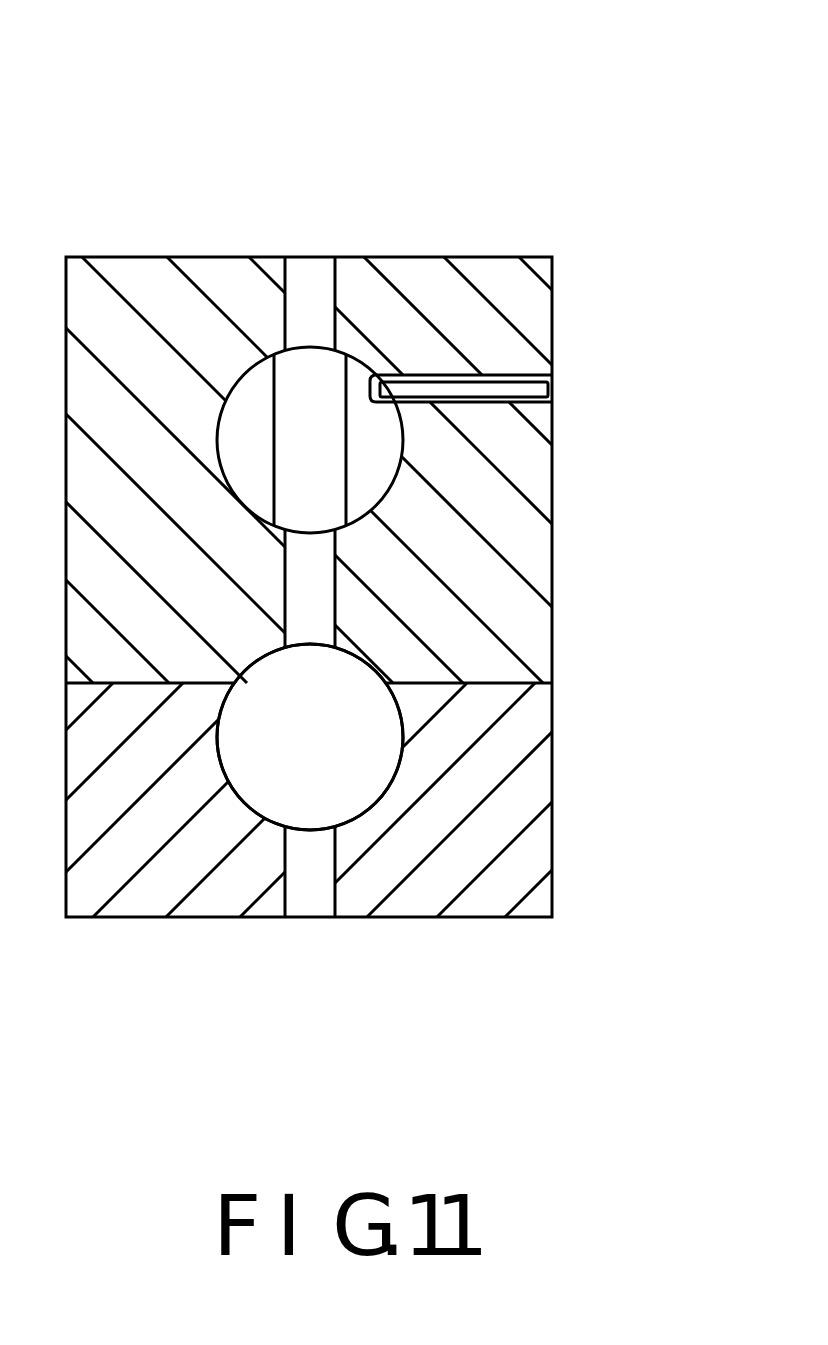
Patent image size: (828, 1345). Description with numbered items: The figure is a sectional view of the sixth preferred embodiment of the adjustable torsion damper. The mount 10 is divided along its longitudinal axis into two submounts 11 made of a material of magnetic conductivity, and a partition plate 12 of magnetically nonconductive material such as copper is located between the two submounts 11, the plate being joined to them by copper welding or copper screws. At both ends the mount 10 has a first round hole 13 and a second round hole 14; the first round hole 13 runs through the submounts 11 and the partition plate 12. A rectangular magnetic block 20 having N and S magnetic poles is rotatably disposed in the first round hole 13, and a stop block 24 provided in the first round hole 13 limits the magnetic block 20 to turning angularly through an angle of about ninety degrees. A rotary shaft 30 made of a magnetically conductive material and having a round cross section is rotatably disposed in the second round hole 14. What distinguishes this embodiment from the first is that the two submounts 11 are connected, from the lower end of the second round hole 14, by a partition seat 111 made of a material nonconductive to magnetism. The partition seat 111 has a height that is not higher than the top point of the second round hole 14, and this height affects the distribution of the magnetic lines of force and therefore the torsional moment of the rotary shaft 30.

The mount 10 is at (87, 90).
The submounts 11 is at (157, 277).
The partition seat 111 is at (158, 890).
The partition plate 12 is at (307, 275).
The first round hole 13 is at (390, 497).
The second round hole 14 is at (401, 720).
The magnetic block 20 is at (337, 446).
The stop block 24 is at (503, 375).
The rotary shaft 30 is at (370, 768).